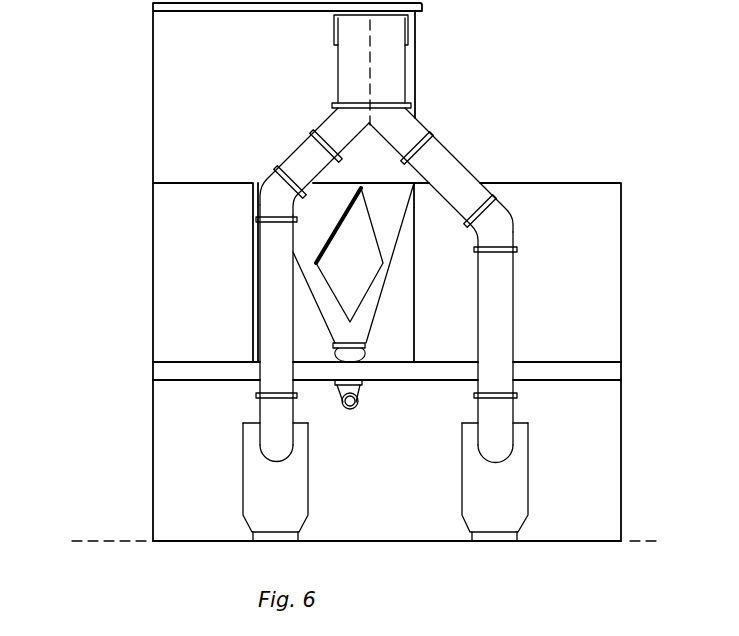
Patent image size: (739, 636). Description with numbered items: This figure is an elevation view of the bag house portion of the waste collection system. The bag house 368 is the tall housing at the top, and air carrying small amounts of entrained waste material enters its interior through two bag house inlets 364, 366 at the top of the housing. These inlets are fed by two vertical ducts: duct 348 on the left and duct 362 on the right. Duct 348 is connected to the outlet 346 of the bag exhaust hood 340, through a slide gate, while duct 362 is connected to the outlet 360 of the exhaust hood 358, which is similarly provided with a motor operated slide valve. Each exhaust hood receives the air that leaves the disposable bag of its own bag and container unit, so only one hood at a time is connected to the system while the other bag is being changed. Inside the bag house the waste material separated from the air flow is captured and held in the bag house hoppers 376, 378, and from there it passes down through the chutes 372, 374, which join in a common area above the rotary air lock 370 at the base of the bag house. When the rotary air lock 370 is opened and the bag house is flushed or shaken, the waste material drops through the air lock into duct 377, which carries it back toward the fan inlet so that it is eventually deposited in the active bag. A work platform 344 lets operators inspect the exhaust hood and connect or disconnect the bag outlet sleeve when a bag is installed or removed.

The bag house 368 is at (153, 118).
The bag house inlet 364 is at (345, 66).
The bag house inlet 366 is at (392, 60).
The bag house hopper 376 is at (300, 237).
The bag house hopper 378 is at (388, 238).
The chute 372 is at (313, 275).
The chute 374 is at (375, 287).
The duct 348 is at (273, 323).
The duct 362 is at (493, 322).
The outlet 346 is at (268, 448).
The outlet 360 is at (502, 447).
The bag exhaust hood 340 is at (295, 502).
The exhaust hood 358 is at (522, 493).
The rotary air lock 370 is at (362, 352).
The duct 377 is at (357, 402).
The work platform 344 is at (103, 540).